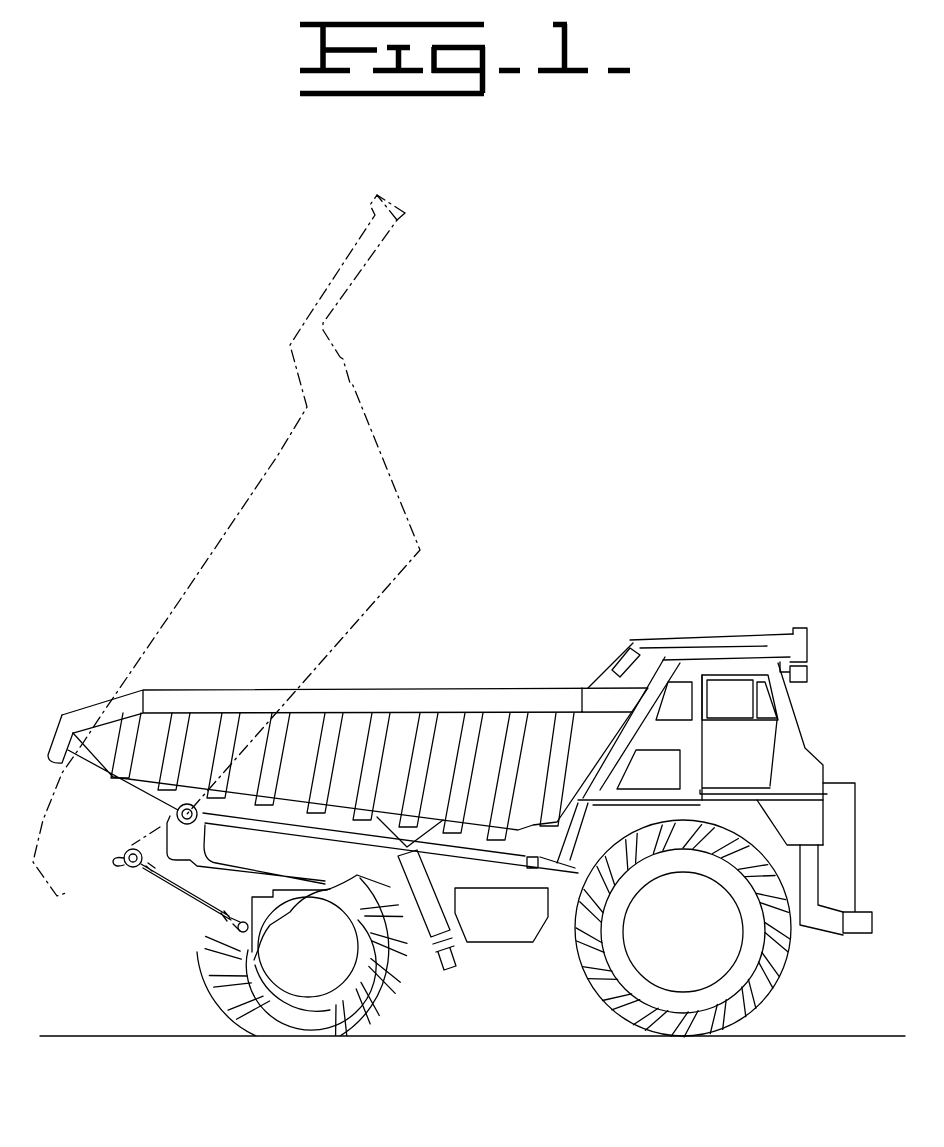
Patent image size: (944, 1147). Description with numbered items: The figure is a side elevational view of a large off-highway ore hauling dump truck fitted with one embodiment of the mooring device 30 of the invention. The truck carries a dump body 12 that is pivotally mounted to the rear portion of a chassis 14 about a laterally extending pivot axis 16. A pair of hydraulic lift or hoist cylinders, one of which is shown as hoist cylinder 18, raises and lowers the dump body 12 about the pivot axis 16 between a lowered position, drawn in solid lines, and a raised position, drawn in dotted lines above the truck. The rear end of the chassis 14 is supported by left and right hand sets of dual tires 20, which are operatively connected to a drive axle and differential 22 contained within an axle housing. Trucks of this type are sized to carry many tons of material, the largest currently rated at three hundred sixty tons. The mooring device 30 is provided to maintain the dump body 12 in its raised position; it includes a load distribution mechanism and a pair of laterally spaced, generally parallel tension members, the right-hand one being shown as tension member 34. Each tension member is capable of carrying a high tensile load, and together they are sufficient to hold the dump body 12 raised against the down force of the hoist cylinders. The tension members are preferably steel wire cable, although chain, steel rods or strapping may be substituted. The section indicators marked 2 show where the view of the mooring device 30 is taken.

The dump body 12 is at (278, 455).
The chassis 14 is at (557, 913).
The pivot axis 16 is at (177, 812).
The hoist cylinder 18 is at (440, 966).
The dual tires 20 is at (307, 1027).
The drive axle and differential 22 is at (277, 889).
The mooring device 30 is at (145, 877).
The second or right-hand tension member 34 is at (190, 897).
The section line 2- 2 is at (120, 828).